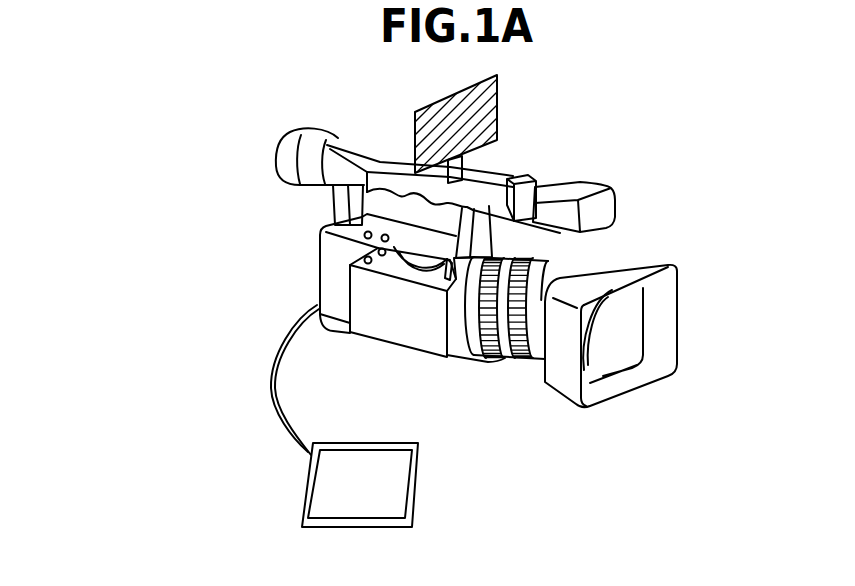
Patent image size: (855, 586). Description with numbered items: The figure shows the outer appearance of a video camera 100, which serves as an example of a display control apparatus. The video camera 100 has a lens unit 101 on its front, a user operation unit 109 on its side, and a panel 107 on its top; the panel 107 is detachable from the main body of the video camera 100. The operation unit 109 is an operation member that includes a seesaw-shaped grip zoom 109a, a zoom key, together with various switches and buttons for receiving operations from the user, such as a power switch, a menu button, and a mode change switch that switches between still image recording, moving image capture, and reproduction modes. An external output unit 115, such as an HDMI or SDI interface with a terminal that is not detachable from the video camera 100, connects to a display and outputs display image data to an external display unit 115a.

The video camera 100 is at (634, 160).
The lens unit 101 is at (590, 333).
The panel 107 is at (498, 104).
The operation unit 109 is at (367, 267).
The grip zoom 109a is at (435, 274).
The external output unit 115 is at (316, 304).
The external display unit 115a is at (421, 484).